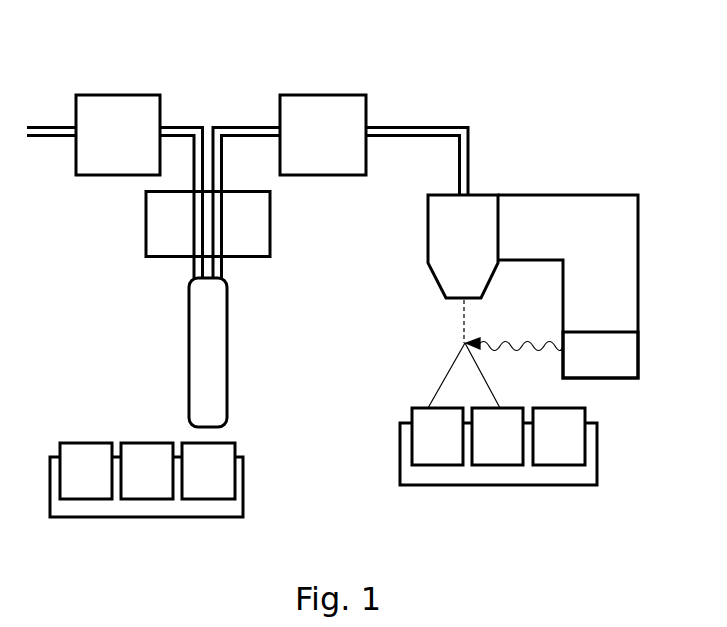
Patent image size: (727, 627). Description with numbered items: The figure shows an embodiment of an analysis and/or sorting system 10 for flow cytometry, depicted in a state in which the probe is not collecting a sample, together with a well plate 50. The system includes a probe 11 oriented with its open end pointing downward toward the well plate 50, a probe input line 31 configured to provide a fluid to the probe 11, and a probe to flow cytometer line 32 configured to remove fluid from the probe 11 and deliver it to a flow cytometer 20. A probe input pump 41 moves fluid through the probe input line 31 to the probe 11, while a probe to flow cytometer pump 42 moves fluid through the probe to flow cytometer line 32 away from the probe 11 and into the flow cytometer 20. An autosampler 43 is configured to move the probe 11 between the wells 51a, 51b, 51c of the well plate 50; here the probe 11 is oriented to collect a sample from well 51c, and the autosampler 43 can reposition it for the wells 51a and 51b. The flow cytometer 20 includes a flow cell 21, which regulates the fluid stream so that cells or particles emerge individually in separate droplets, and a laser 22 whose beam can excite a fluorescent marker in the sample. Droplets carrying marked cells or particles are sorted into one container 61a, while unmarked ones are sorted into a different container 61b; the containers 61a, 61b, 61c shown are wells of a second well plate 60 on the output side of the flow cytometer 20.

The analysis and/or sorting system 10 is at (507, 132).
The probe 11 is at (188, 375).
The flow cytometer 20 is at (568, 286).
The flow cell 21 is at (463, 246).
The laser 22 is at (600, 355).
The probe input line 31 is at (177, 125).
The probe to flow cytometer line 32 is at (408, 124).
The probe input pump 41 is at (118, 135).
The probe to flow cytometer pump 42 is at (323, 135).
The autosampler 43 is at (145, 225).
The well plate 50 is at (133, 518).
The well 51a is at (86, 471).
The well 51b is at (147, 471).
The well 51c is at (208, 471).
The second sensor group 60 is at (487, 486).
The container 61a is at (437, 436).
The container 61b is at (497, 436).
The sensor 61c is at (559, 436).